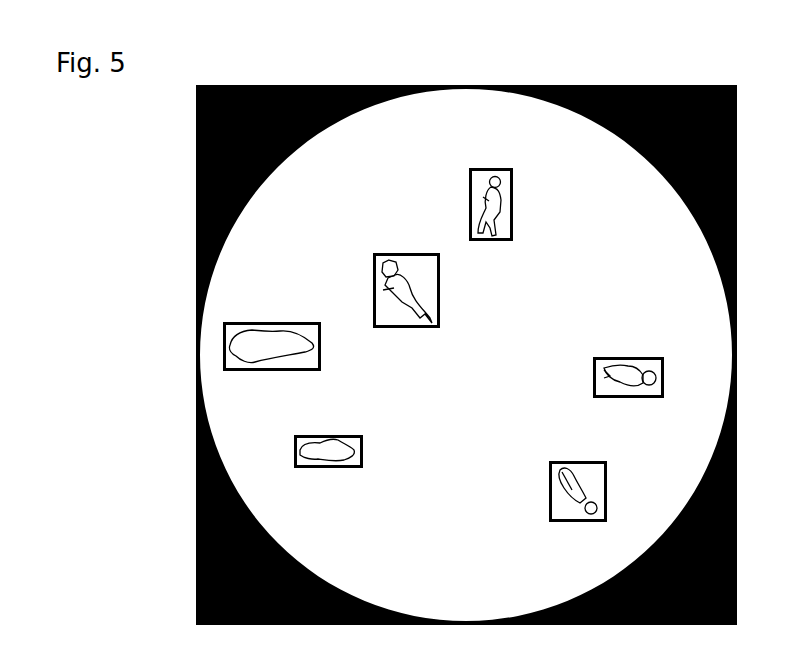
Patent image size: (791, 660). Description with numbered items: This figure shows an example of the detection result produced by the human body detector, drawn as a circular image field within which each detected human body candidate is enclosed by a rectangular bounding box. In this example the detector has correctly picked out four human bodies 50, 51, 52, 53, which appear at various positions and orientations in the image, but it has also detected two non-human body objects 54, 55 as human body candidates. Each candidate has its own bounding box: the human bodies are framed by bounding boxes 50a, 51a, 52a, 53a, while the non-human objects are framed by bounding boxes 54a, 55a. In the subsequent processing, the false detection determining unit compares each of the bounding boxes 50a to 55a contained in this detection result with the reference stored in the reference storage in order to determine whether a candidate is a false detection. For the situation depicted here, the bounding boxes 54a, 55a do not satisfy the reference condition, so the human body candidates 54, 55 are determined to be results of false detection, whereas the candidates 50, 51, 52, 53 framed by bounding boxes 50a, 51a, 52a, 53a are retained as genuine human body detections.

The human body 50 is at (480, 197).
The bounding box 50a is at (512, 184).
The human body 51 is at (392, 288).
The bounding box 51a is at (440, 265).
The human body 52 is at (607, 372).
The bounding box 52a is at (618, 357).
The human body 53 is at (563, 490).
The bounding box 53a is at (606, 472).
The non-human body object 54 is at (273, 336).
The bounding box 54a is at (320, 355).
The non-human body object 55 is at (330, 442).
The bounding box 55a is at (330, 467).